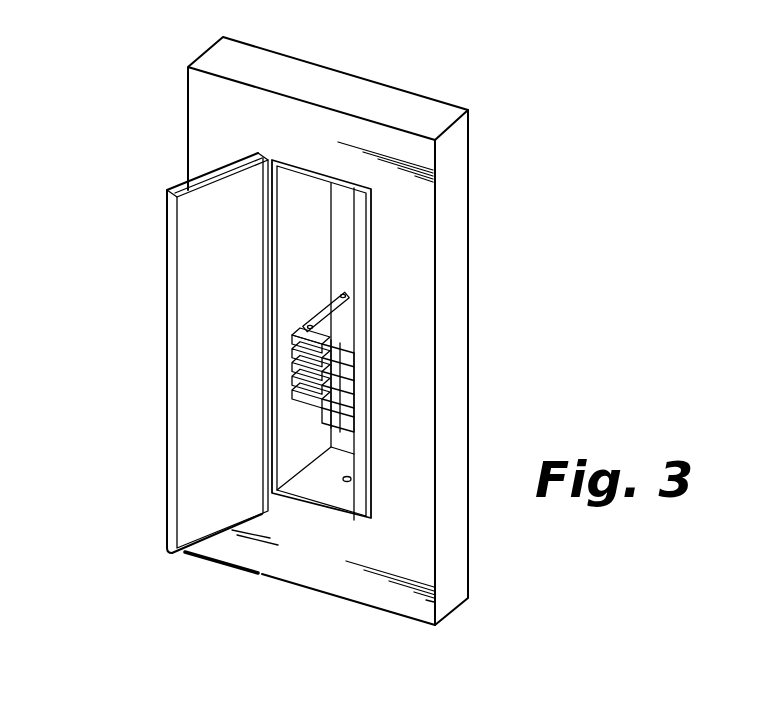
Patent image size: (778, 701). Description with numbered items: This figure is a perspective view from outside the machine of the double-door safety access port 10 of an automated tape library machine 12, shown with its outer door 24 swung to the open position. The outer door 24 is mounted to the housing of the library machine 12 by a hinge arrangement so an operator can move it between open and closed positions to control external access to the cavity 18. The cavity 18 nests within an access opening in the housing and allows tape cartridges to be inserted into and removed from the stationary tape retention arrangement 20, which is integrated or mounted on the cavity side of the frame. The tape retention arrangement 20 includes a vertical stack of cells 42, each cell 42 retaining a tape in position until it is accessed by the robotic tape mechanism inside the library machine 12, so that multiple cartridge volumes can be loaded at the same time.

The double-door safety access port 10 is at (324, 315).
The automated tape library machine 12 is at (350, 66).
The cavity 18 is at (318, 263).
The stationary tape retention arrangement 20 is at (306, 312).
The outer door 24 is at (165, 436).
The cell 42 is at (293, 357).